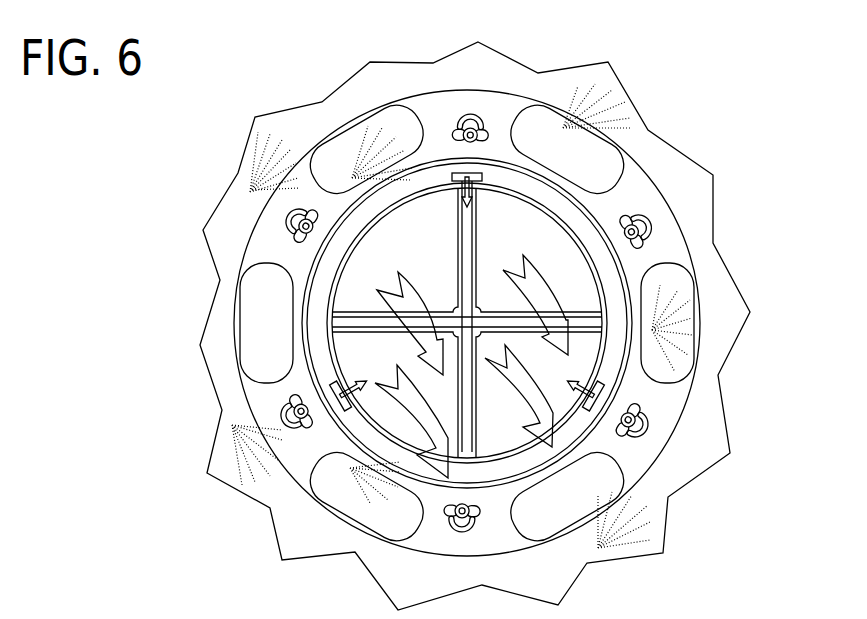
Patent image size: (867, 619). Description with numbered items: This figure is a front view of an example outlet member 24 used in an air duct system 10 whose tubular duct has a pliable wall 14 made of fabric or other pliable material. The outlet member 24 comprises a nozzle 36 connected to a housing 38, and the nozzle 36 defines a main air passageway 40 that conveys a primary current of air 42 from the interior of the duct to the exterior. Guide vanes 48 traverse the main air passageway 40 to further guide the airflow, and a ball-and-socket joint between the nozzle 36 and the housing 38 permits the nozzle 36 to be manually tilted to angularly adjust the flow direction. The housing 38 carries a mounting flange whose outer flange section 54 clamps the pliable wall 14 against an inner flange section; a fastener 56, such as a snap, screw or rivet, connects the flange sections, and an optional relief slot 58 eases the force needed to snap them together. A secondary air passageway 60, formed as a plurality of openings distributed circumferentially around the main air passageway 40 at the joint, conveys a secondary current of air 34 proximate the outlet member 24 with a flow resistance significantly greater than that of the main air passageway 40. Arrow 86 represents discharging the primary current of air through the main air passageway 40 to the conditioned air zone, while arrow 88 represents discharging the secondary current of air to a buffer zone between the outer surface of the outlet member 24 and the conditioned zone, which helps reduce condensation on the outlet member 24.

The air duct system 10 is at (730, 94).
The pliable wall 14 is at (722, 302).
The outlet member 24 is at (647, 175).
The secondary current of air 34 is at (458, 186).
The nozzle 36 is at (556, 276).
The housing 38 is at (625, 378).
The main air passageway 40 is at (371, 266).
The primary current of air 42 is at (412, 428).
The guide vane 48 is at (472, 413).
The outer flange section 54 is at (262, 382).
The fastener 56 is at (468, 113).
The relief slot 58 is at (288, 218).
The secondary air passageway 60 is at (467, 184).
The arrow 86 is at (395, 378).
The arrow 88 is at (458, 188).